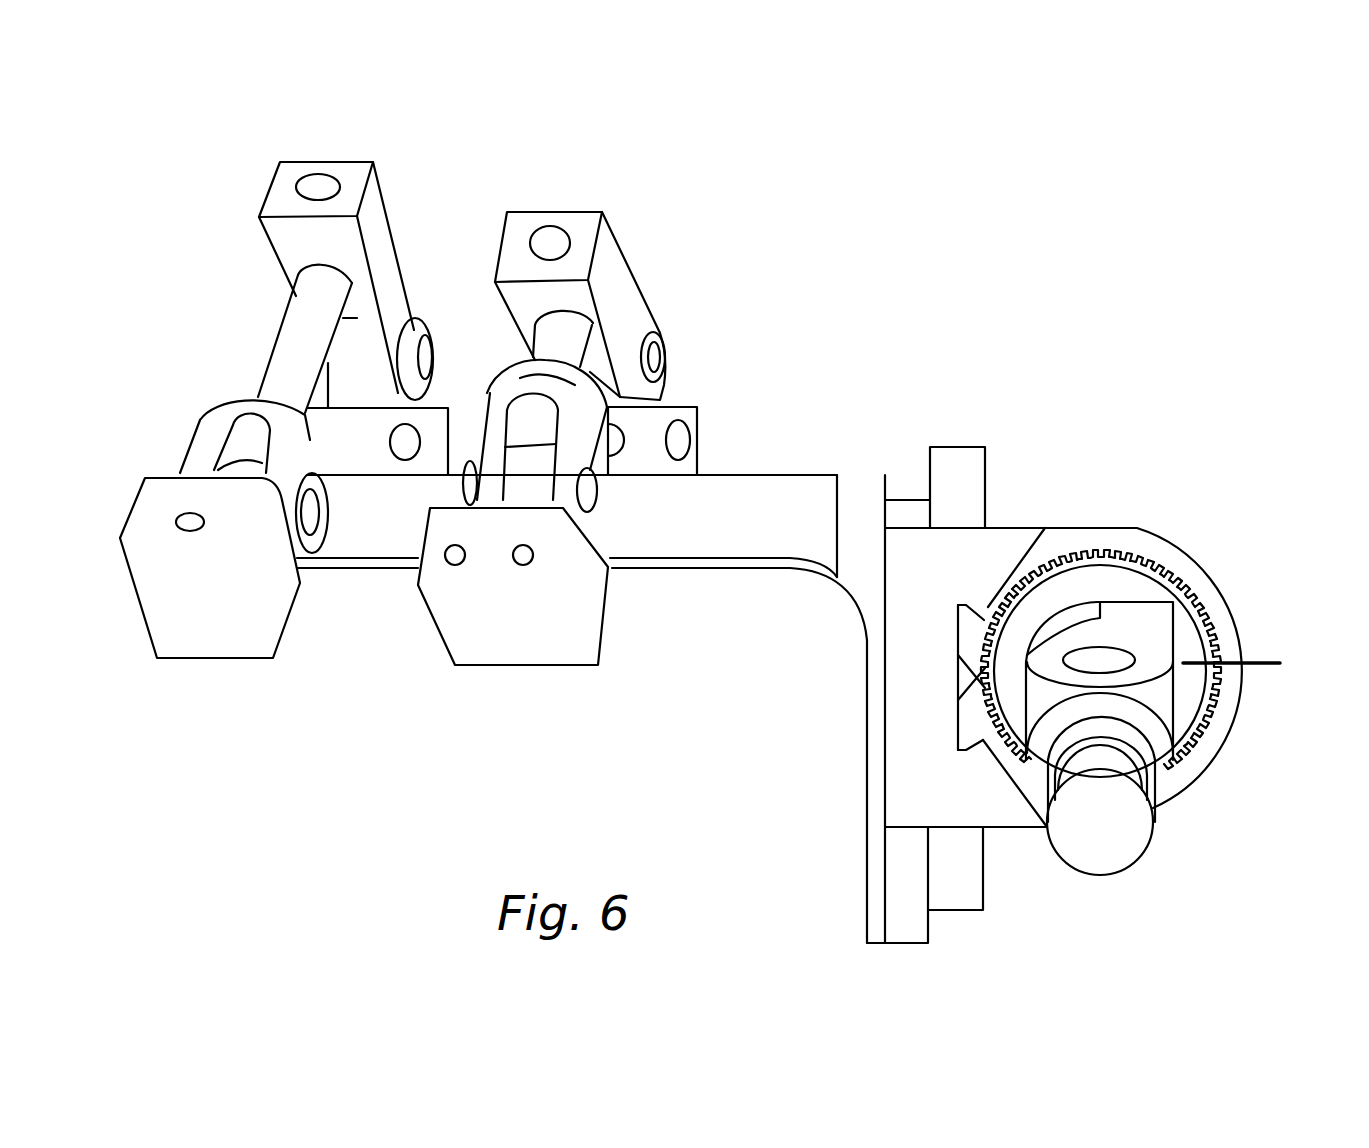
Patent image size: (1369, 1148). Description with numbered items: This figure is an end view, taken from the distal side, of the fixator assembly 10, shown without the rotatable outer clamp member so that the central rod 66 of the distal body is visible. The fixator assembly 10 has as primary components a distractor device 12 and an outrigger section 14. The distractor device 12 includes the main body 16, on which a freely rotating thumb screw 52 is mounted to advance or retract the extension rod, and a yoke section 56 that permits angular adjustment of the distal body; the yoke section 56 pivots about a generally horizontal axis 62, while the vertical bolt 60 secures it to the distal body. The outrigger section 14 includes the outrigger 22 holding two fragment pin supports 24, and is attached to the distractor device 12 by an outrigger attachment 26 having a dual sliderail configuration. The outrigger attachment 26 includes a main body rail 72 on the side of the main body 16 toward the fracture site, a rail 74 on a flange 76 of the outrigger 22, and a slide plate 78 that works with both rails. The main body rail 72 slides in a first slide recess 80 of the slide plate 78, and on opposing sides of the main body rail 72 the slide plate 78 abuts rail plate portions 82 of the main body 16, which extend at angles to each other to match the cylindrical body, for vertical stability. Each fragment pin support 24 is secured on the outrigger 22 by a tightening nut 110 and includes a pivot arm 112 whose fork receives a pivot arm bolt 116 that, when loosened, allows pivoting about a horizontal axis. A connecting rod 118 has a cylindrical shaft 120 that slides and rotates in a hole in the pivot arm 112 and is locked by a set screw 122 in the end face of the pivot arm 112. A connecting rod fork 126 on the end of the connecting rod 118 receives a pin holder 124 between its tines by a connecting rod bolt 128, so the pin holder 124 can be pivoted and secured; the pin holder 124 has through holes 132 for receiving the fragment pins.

The fixator assembly 10 is at (754, 180).
The distractor device 12 is at (1135, 405).
The outrigger section 14 is at (455, 176).
The main body 16 is at (1113, 530).
The outrigger 22 is at (708, 485).
The fragment pin support 24 is at (268, 150).
The outrigger attachment 26 is at (871, 410).
The thumb screw 52 is at (1150, 568).
The yoke section 56 is at (1158, 660).
The vertical bolt 60 is at (1110, 660).
The horizontal axis 62 is at (1240, 663).
The central rod 66 is at (1130, 825).
The main body rail 72 is at (958, 628).
The rail 74 is at (905, 920).
The flange 76 is at (873, 843).
The slide plate 78 is at (950, 540).
The first slide recess 80 is at (958, 677).
The rail plate portions 82 is at (1010, 558).
The tightening nut 110 is at (437, 418).
The pivot arm 112 is at (388, 238).
The pivot arm bolt 116 is at (420, 355).
The connecting rod 118 is at (277, 338).
The cylindrical shaft 120 is at (308, 293).
The set screw 122 is at (318, 185).
The pin holder 124 is at (238, 628).
The connecting rod fork 126 is at (214, 415).
The connecting rod bolt 128 is at (318, 513).
The through hole 132 is at (188, 512).